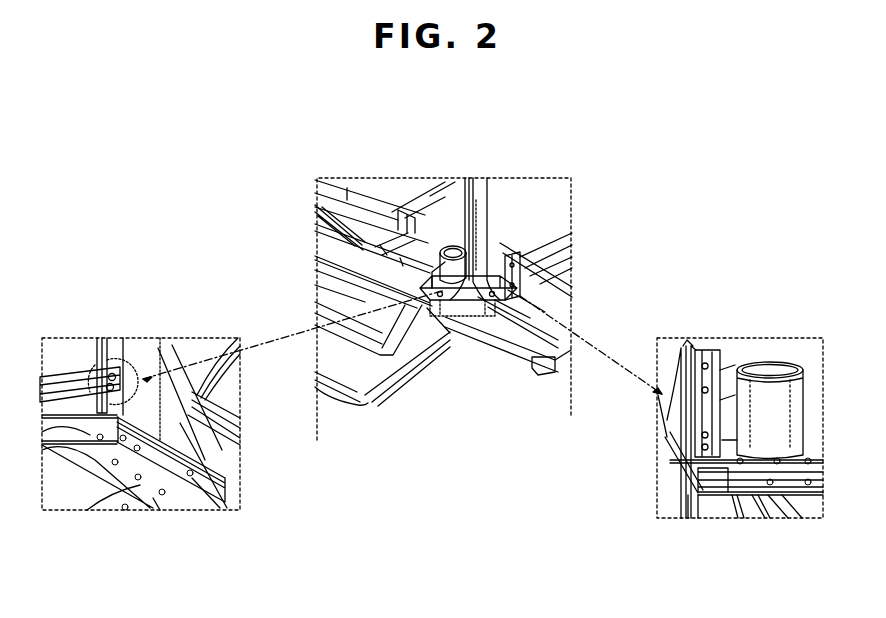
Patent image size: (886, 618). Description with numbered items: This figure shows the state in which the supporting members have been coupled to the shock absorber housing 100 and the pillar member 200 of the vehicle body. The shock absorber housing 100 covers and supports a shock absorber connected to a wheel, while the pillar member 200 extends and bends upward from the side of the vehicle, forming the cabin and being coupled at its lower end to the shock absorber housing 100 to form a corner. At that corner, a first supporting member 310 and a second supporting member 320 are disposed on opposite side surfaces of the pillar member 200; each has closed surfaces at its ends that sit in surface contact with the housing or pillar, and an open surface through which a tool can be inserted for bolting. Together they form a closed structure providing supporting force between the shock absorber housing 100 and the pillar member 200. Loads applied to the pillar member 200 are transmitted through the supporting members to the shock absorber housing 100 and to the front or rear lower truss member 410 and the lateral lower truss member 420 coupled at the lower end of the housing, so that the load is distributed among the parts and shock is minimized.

The shock absorber housing 100 is at (450, 250).
The pillar member 200 is at (480, 176).
The first supporting member 310 is at (452, 325).
The second supporting member 320 is at (518, 262).
The front or rear lower truss member 410 is at (382, 378).
The lateral lower truss member 420 is at (552, 373).